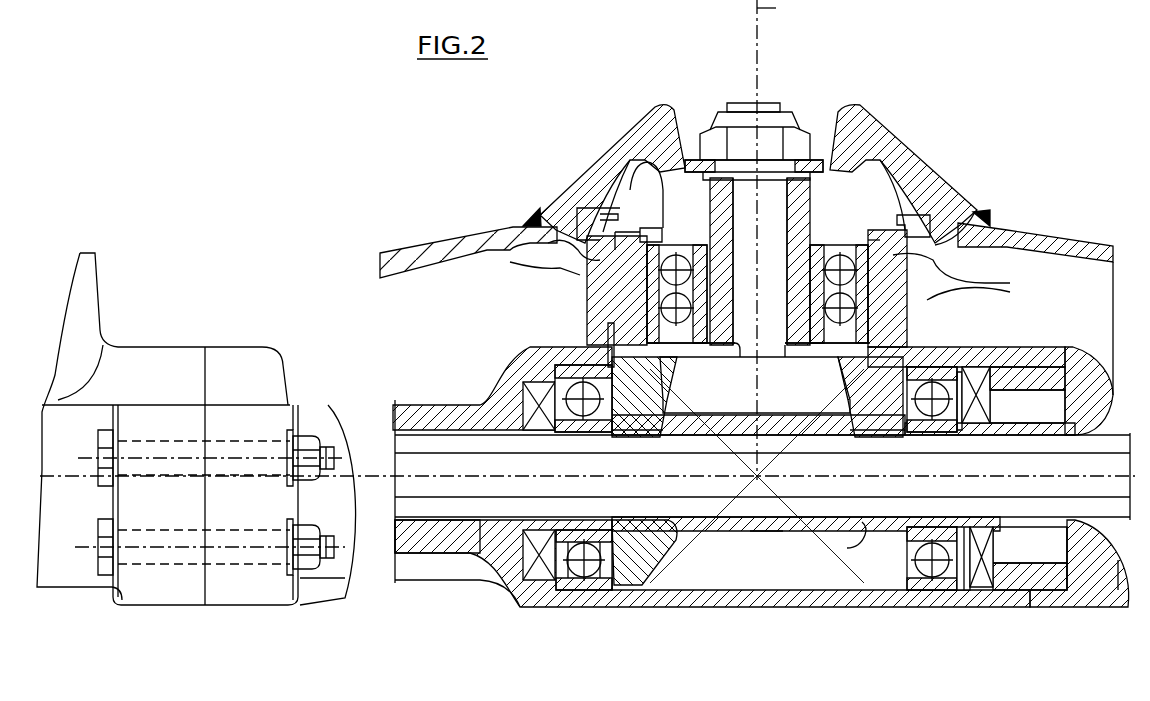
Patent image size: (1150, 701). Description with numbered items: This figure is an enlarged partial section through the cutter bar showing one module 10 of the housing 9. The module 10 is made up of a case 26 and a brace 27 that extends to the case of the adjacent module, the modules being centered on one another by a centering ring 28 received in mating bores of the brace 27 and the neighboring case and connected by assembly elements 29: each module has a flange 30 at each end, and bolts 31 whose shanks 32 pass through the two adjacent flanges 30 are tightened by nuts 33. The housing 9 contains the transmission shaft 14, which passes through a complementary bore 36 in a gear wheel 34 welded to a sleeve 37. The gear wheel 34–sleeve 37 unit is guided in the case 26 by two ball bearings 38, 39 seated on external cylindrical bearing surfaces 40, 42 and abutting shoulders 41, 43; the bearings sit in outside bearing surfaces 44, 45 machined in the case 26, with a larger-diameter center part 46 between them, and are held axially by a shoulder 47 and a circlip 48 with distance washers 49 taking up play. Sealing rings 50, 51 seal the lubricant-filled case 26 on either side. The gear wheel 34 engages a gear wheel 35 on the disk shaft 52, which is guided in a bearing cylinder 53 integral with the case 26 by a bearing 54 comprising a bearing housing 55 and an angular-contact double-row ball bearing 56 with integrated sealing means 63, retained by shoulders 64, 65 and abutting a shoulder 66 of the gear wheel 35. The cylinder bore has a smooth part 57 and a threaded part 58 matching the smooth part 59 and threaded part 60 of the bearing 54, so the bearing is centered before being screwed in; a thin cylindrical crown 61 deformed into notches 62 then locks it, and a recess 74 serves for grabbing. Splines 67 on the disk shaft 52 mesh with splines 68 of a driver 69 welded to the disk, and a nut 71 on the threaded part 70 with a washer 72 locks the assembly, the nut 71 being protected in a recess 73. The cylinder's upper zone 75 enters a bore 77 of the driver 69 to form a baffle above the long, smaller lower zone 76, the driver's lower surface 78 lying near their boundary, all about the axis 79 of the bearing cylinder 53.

The housing 9 is at (441, 580).
The module 10 is at (120, 597).
The transmission shaft 14 is at (412, 485).
The case 26 is at (68, 583).
The brace 27 is at (350, 578).
The centering ring 28 is at (1040, 380).
The assembly elements 29 is at (318, 418).
The flange 30 is at (160, 597).
The bolt 31 is at (105, 547).
The shank 32 is at (333, 460).
The nut 33 is at (300, 430).
The gear wheel 34 is at (645, 565).
The gear wheel 35 is at (802, 394).
The bore 36 is at (672, 540).
The sleeve 37 is at (847, 548).
The ball bearing 38 is at (597, 580).
The ball bearing 39 is at (923, 583).
The external cylindrical bearing surface 40 is at (535, 412).
The shoulder 41 is at (613, 430).
The external cylindrical bearing surface 42 is at (990, 425).
The shoulder 43 is at (893, 430).
The outside bearing surface 44 is at (568, 590).
The outside bearing surface 45 is at (915, 590).
The center part 46 is at (777, 590).
The shoulder 47 is at (567, 380).
The circlip 48 is at (965, 370).
The distance washers 49 is at (958, 582).
The sealing ring 50 is at (543, 563).
The sealing ring 51 is at (995, 537).
The disk shaft 52 is at (786, 212).
The bearing cylinder 53 is at (915, 272).
The bearing 54 is at (930, 282).
The bearing housing 55 is at (625, 283).
The ball bearing 56 is at (860, 240).
The smooth part 57 is at (985, 212).
The threaded part 58 is at (920, 367).
The smooth part 59 is at (907, 205).
The threaded part 60 is at (915, 293).
The thin cylindrical crown 61 is at (627, 238).
The notches 62 is at (580, 222).
The integrated sealing means 63 is at (812, 210).
The shoulder 64 is at (651, 228).
The shoulder 65 is at (608, 335).
The shoulder 66 is at (822, 340).
The splines 67 is at (805, 232).
The splines 68 is at (880, 162).
The driver 69 is at (862, 122).
The threaded part 70 is at (763, 103).
The nut 71 is at (720, 125).
The washer 72 is at (688, 106).
The recess 73 is at (832, 167).
The recess 74 is at (697, 245).
The upper zone 75 is at (565, 250).
The lower zone 76 is at (583, 282).
The bore 77 is at (527, 227).
The lower surface 78 is at (1011, 230).
The axis 79 is at (781, 240).